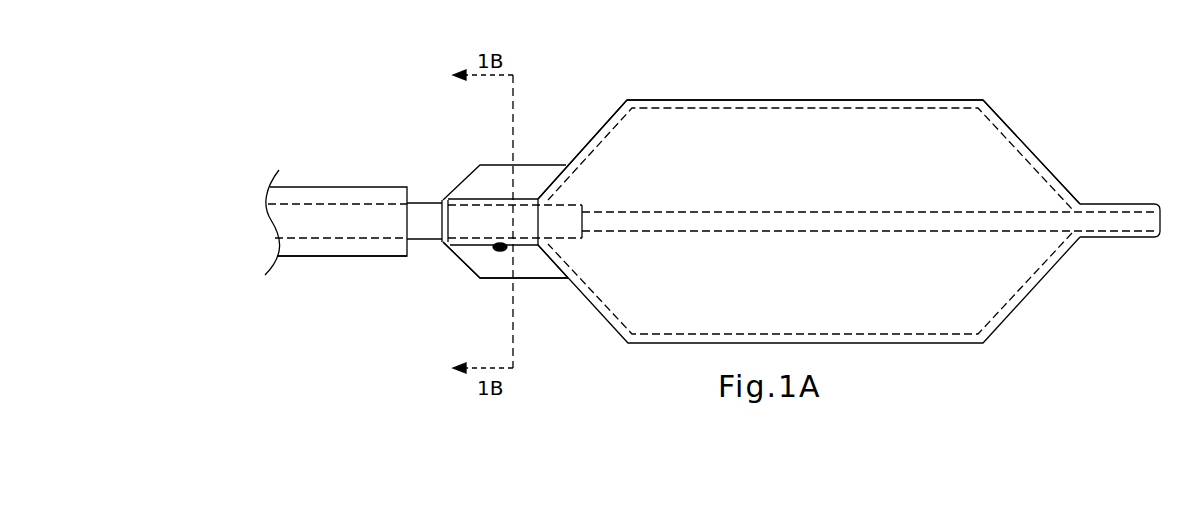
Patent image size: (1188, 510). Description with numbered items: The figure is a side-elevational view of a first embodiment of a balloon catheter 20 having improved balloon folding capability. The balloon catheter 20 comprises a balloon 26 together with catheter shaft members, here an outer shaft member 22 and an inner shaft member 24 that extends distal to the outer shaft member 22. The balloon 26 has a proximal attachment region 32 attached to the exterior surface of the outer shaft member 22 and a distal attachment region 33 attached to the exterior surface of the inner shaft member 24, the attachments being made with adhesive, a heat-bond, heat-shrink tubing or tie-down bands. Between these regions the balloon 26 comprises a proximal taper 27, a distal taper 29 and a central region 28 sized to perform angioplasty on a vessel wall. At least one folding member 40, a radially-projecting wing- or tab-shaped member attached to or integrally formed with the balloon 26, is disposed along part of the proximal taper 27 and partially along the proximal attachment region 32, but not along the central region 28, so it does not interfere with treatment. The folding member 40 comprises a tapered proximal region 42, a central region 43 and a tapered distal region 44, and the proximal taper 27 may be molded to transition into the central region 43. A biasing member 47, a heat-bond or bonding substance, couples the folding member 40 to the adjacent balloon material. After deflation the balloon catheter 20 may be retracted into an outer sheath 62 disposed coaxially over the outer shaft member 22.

The balloon catheter 20 is at (322, 109).
The outer shaft member 22 is at (380, 220).
The inner shaft member 24 is at (1033, 227).
The balloon 26 is at (867, 149).
The proximal taper 27 is at (595, 134).
The central region 28 is at (735, 100).
The distal taper 29 is at (1040, 160).
The proximal attachment region 32 is at (460, 218).
The distal attachment region 33 is at (1120, 204).
The folding member 40 is at (480, 163).
The tapered proximal region 42 is at (470, 273).
The central region 43 is at (503, 280).
The tapered distal region 44 is at (555, 275).
The biasing member 47 is at (500, 247).
The outer sheath 62 is at (313, 258).